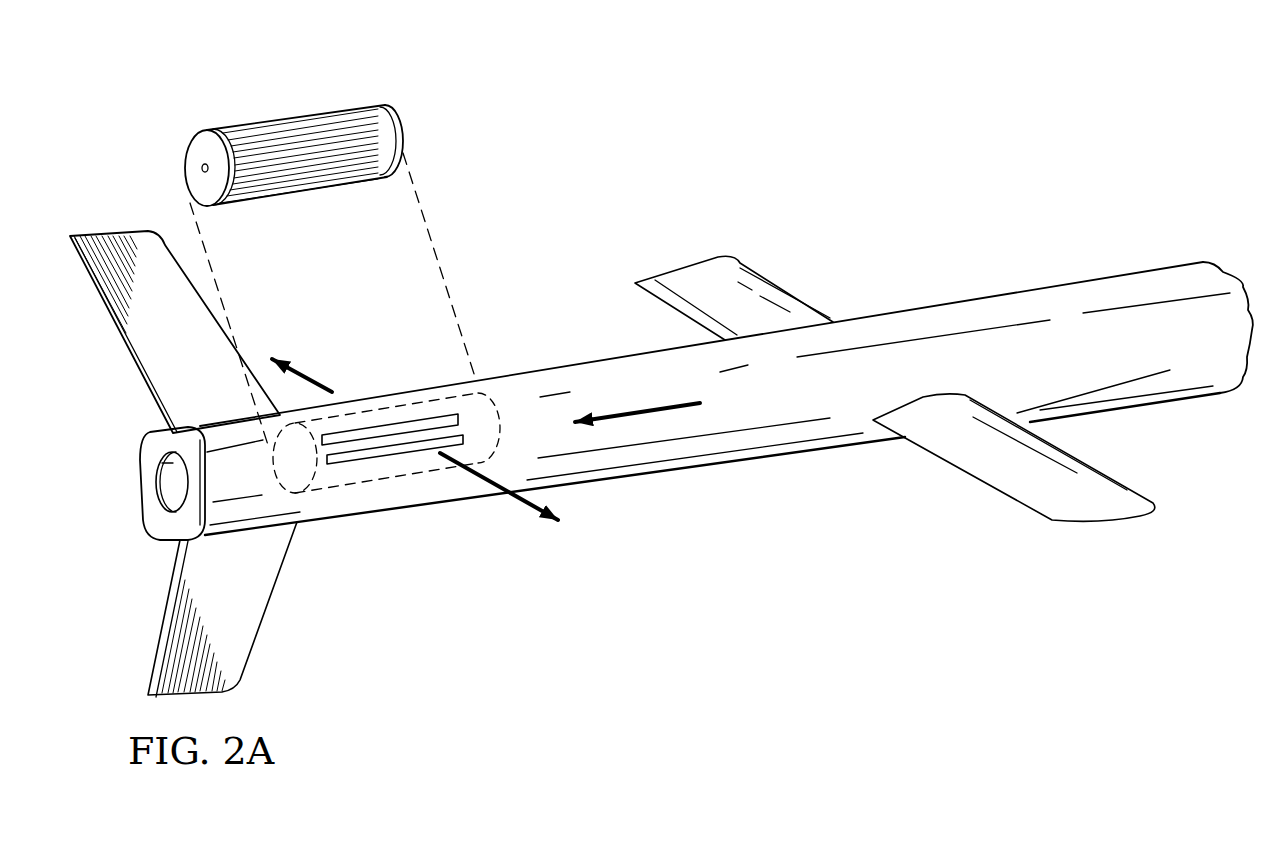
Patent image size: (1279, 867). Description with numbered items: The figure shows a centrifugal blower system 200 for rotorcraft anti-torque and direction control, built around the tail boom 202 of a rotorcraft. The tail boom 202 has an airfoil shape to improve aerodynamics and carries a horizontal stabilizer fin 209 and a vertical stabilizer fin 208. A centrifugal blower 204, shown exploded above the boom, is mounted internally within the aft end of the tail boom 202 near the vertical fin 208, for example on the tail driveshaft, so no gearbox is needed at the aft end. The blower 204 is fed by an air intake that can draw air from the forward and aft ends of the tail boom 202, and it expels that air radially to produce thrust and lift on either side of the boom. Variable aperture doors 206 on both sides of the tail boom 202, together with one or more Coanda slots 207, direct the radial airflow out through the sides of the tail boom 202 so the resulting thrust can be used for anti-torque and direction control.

The centrifugal blower system 200 is at (764, 90).
The tail boom 202 is at (165, 522).
The centrifugal blower 204 is at (258, 112).
The variable aperture doors 206 is at (433, 420).
The Coanda slot 207 is at (383, 456).
The vertical stabilizer fin 208 is at (150, 376).
The horizontal stabilizer fin 209 is at (701, 268).